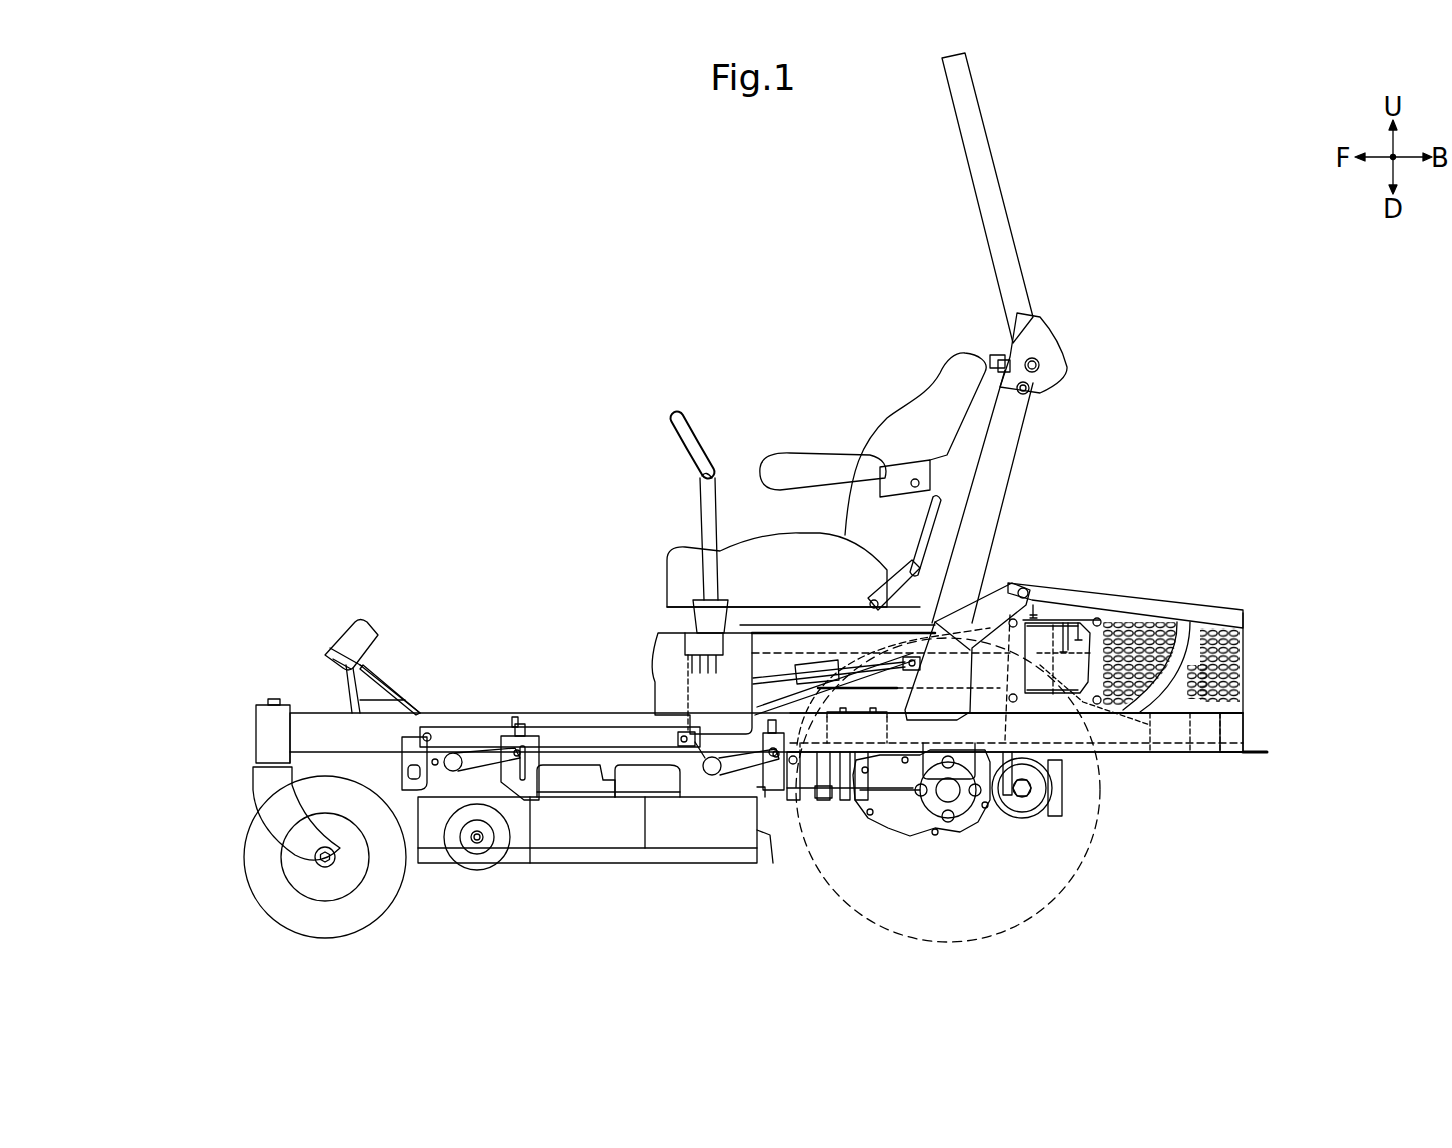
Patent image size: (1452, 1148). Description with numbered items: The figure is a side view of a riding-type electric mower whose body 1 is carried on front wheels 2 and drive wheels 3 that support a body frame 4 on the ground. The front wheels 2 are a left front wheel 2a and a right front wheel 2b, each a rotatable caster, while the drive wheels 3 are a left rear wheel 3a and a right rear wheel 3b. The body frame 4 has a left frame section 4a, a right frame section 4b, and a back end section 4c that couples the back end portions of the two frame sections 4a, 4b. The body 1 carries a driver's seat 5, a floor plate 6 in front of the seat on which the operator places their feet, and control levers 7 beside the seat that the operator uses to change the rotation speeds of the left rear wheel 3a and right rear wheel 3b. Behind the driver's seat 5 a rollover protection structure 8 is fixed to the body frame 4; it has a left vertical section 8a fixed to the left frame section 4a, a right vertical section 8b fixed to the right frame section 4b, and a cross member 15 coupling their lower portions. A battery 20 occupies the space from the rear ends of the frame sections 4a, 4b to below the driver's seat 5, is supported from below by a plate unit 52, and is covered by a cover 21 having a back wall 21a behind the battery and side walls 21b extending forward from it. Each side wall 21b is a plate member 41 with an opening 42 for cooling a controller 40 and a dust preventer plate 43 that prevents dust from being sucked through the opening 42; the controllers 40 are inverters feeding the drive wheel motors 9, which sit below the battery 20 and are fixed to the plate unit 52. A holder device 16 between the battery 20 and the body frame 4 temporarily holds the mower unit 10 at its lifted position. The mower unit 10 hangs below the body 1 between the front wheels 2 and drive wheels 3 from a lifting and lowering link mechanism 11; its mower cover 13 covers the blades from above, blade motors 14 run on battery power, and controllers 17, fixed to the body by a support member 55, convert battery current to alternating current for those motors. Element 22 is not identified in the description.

The body 1 is at (492, 592).
The front wheels 2 is at (260, 852).
The left front wheel 2a is at (260, 852).
The right front wheel 2b is at (242, 856).
The drive wheels 3 is at (892, 793).
The left rear wheel 3a is at (892, 793).
The right rear wheel 3b is at (852, 918).
The body frame 4 is at (318, 708).
The left frame section 4a is at (1016, 800).
The right frame section 4b is at (1112, 754).
The back end section 4c is at (1236, 752).
The driver's seat 5 is at (898, 425).
The floor plate 6 is at (402, 705).
The control levers 7 is at (695, 445).
The rollover protection structure (ROPS) 8 is at (1013, 195).
The left vertical section 8a is at (1031, 496).
The right vertical section 8b is at (1003, 477).
The drive wheel motors 9 is at (960, 812).
The mower unit 10 is at (577, 872).
The lifting and lowering link mechanism 11 is at (598, 728).
The mower cover 13 is at (690, 810).
The motors 14 is at (570, 780).
The cross member 15 is at (986, 620).
The holder device 16 is at (827, 670).
The controllers 17 is at (830, 792).
The battery 20 is at (1212, 755).
The cover 21 is at (1250, 640).
The back wall 21a is at (1245, 668).
The side wall 21b is at (1160, 620).
The rear bumper 22 is at (1258, 745).
The controllers 40 is at (1035, 678).
The plate member 41 is at (1034, 612).
The opening 42 is at (1063, 625).
The dust preventer plate 43 is at (1090, 622).
The plate unit 52 is at (782, 702).
The support member 55 is at (793, 782).